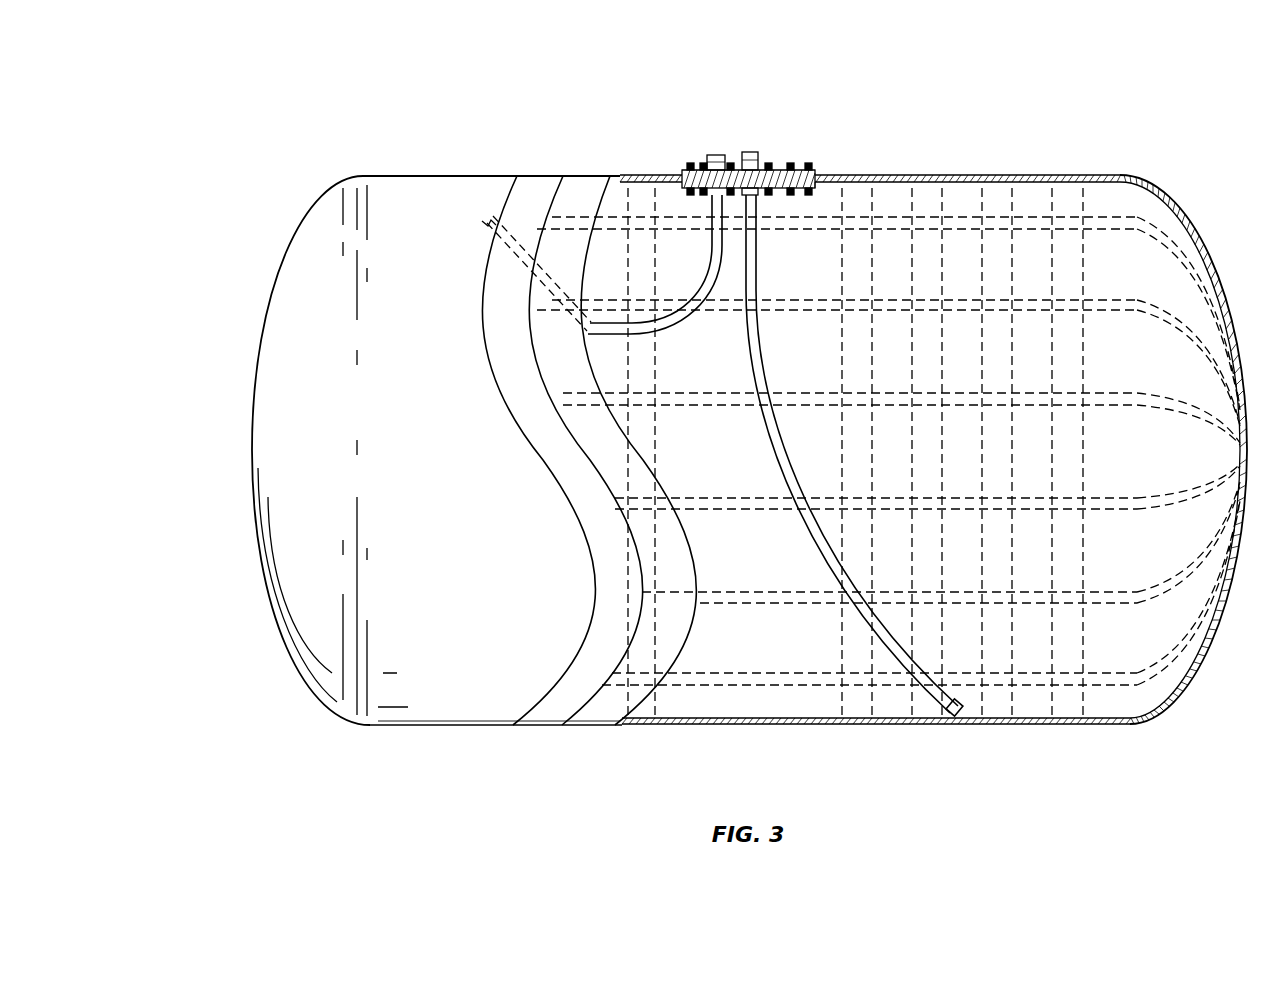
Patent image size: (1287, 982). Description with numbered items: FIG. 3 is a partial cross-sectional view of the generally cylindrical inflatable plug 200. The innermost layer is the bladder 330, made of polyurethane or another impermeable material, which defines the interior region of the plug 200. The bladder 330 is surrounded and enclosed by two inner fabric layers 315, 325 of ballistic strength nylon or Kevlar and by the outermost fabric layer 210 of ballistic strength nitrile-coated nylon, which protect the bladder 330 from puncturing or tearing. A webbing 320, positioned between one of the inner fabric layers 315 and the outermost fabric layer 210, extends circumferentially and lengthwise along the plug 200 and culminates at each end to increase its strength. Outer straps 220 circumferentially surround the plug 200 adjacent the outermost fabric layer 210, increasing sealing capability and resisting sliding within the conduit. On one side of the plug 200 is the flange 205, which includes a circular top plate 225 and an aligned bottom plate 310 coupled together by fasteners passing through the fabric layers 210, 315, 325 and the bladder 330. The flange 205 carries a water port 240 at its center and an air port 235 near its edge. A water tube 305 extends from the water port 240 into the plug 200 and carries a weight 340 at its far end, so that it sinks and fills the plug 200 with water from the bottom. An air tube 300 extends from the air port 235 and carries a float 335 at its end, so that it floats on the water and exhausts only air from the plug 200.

The inflatable plug 200 is at (236, 140).
The flange 205 is at (791, 128).
The outermost fabric layer 210 is at (1154, 205).
The outer straps 220 is at (1068, 178).
The top plate 225 is at (815, 172).
The air port 235 is at (715, 153).
The water port 240 is at (750, 150).
The air tube 300 is at (700, 273).
The water tube 305 is at (897, 650).
The bottom plate 310 is at (826, 195).
The inner fabric layer 315 is at (598, 714).
The webbing 320 is at (638, 728).
The inner fabric layer 325 is at (542, 714).
The bladder 330 is at (427, 707).
The float 335 is at (487, 220).
The weight 340 is at (960, 718).